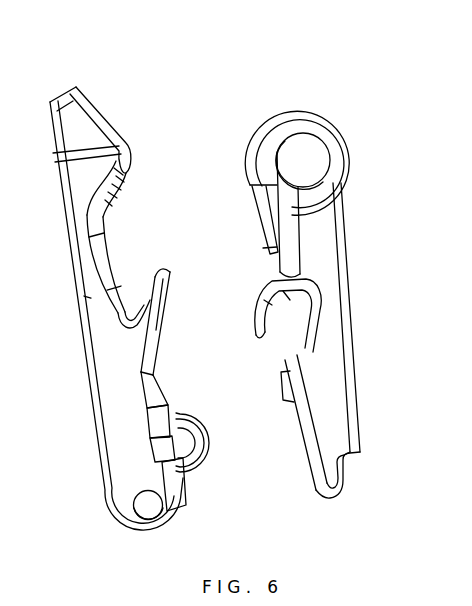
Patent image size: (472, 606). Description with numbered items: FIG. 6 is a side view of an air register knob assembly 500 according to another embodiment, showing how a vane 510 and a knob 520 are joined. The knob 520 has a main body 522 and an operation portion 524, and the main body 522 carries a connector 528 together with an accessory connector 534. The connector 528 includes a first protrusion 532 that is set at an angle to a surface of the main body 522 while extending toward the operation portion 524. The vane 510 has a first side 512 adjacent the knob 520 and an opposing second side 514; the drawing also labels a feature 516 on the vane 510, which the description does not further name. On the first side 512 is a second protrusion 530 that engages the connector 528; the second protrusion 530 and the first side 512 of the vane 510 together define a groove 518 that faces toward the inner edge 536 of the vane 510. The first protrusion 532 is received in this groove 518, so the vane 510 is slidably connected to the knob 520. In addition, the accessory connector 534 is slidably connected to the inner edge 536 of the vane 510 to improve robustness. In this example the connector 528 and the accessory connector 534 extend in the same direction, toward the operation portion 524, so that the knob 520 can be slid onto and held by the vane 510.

The air register knob assembly 500 is at (215, 275).
The vane 510 is at (298, 284).
The first side 512 is at (266, 250).
The second side 514 is at (337, 258).
The circular opening 516 is at (334, 154).
The groove 518 is at (294, 317).
The knob 520 is at (129, 295).
The main body 522 is at (69, 258).
The operation portion 524 is at (113, 142).
The connector 528 is at (137, 283).
The second protrusion 530 is at (255, 328).
The first protrusion 532 is at (155, 318).
The accessory connector 534 is at (208, 456).
The inner edge 536 is at (343, 491).